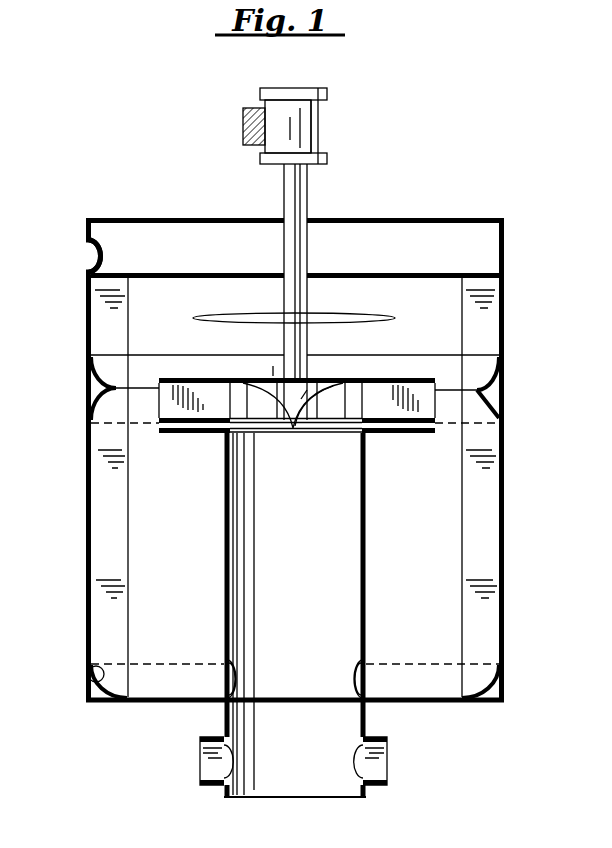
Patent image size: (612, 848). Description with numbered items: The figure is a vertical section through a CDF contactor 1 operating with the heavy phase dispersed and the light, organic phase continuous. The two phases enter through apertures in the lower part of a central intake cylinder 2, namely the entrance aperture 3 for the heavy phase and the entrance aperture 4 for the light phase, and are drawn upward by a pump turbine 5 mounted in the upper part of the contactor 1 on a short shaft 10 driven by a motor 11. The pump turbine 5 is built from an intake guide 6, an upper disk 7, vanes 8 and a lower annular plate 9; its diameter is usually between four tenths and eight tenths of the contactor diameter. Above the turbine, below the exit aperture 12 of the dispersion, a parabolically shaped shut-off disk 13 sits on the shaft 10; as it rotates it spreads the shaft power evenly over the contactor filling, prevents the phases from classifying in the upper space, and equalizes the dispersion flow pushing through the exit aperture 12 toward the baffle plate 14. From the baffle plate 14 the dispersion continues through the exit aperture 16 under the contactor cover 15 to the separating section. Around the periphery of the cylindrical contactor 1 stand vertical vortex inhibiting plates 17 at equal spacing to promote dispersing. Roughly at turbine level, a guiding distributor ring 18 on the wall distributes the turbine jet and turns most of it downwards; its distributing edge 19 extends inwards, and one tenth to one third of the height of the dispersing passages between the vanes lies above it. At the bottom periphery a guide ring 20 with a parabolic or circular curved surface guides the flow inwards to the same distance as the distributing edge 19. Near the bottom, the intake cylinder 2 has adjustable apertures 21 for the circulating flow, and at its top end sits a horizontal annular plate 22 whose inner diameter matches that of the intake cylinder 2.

The contactor 1 is at (452, 505).
The intake cylinder 2 is at (366, 565).
The entrance aperture of the heavy phase 3 is at (210, 765).
The entrance aperture of the light phase 4 is at (383, 758).
The pump turbine 5 is at (273, 368).
The intake guide 6 is at (297, 430).
The upper disk 7 is at (418, 378).
The vanes 8 is at (427, 425).
The lower annular plate 9 is at (385, 433).
The short shaft 10 is at (296, 340).
The motor 11 is at (318, 123).
The exit aperture of the dispersion 12 is at (318, 273).
The shut-off disk 13 is at (365, 315).
The baffle plate 14 is at (225, 273).
The contactor cover 15 is at (205, 218).
The exit aperture 16 is at (88, 252).
The vortex inhibiting plates 17 is at (110, 531).
The guiding distributor ring 18 is at (92, 383).
The distributing edge 19 is at (128, 390).
The guide ring 20 is at (87, 668).
The adjustable apertures 21 is at (225, 672).
The horizontal annular plate 22 is at (190, 433).